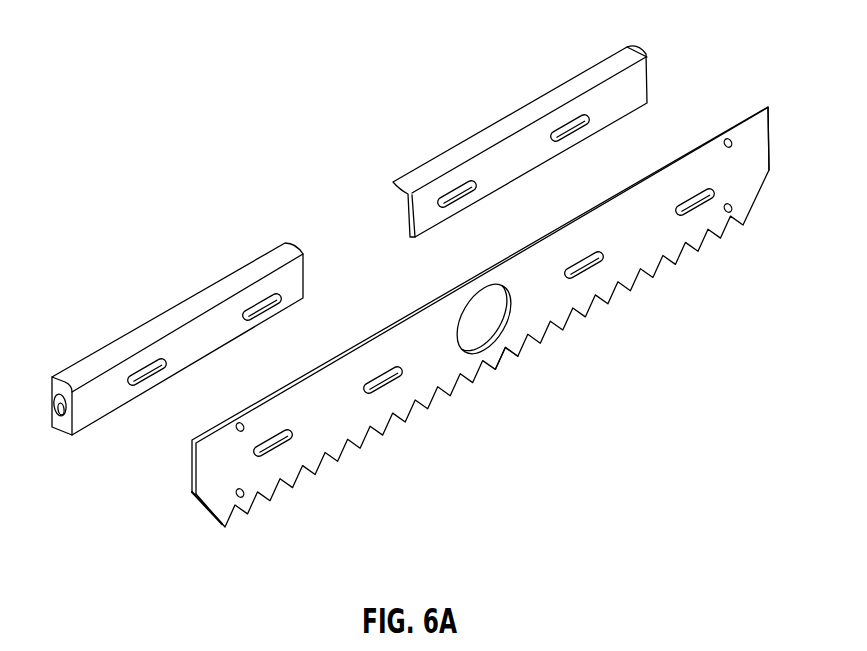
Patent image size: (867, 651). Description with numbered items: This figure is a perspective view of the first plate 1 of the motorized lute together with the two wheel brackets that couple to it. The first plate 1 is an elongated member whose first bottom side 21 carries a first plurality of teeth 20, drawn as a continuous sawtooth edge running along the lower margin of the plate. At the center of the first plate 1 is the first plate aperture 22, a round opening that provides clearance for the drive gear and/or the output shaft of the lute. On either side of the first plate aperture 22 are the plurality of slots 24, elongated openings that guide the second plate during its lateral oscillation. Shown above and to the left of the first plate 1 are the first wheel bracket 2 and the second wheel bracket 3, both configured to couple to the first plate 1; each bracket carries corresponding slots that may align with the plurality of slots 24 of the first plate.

The first plate 1 is at (748, 167).
The first wheel bracket 2 is at (250, 273).
The second wheel bracket 3 is at (592, 75).
The first plurality of teeth 20 is at (680, 258).
The first bottom side 21 is at (503, 350).
The first plate aperture 22 is at (490, 303).
The plurality of slots 24 is at (278, 448).